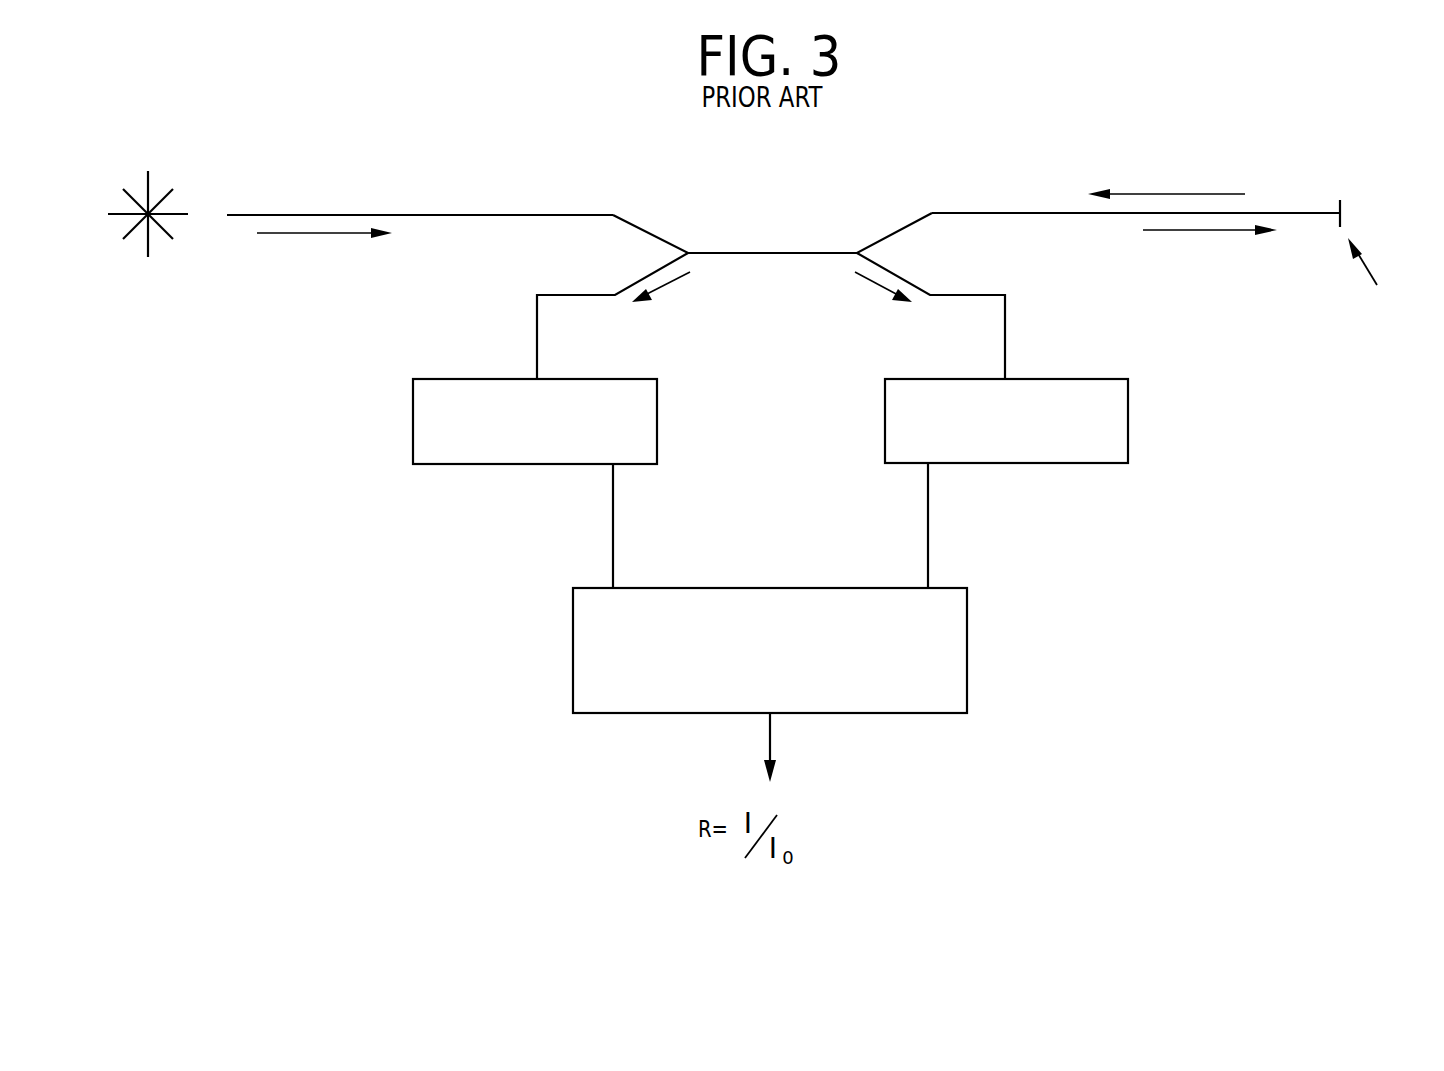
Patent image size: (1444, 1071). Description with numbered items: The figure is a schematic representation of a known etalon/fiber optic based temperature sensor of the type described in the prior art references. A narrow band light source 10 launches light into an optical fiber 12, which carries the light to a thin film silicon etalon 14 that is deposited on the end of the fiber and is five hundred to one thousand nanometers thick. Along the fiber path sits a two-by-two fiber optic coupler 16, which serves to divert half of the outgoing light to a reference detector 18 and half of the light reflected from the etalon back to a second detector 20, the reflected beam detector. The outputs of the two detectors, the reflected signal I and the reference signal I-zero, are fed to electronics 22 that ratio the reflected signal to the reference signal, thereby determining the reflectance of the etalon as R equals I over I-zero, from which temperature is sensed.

The narrow band light source 10 is at (161, 178).
The optical fiber 12 is at (295, 214).
The thin film silicon etalon 14 is at (1343, 218).
The 2×2 fiber optic coupler 16 is at (735, 255).
The reference detector 18 is at (1117, 427).
The second detector 20 is at (431, 379).
The electronics 22 is at (950, 650).